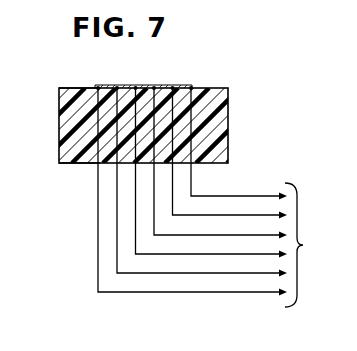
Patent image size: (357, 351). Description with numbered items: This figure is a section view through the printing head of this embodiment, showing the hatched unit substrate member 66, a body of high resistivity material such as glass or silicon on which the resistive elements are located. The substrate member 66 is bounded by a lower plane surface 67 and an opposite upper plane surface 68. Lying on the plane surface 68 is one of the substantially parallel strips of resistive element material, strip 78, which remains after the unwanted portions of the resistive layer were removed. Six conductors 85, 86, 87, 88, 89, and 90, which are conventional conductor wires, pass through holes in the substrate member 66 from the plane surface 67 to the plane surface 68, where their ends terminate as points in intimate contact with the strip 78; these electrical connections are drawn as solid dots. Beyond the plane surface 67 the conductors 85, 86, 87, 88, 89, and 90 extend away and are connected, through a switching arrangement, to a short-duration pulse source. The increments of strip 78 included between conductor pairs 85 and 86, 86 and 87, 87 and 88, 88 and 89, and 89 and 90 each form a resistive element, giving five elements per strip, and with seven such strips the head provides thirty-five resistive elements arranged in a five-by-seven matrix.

The unit substrate member 66 is at (227, 117).
The plane surface 67 is at (76, 163).
The opposite plane surface 68 is at (81, 88).
The strip of resistive element material 78 is at (191, 85).
The conductor 85 is at (100, 292).
The conductor 86 is at (119, 273).
The conductor 87 is at (138, 254).
The conductor 88 is at (192, 235).
The conductor 89 is at (197, 215).
The conductor wire 90 is at (203, 196).